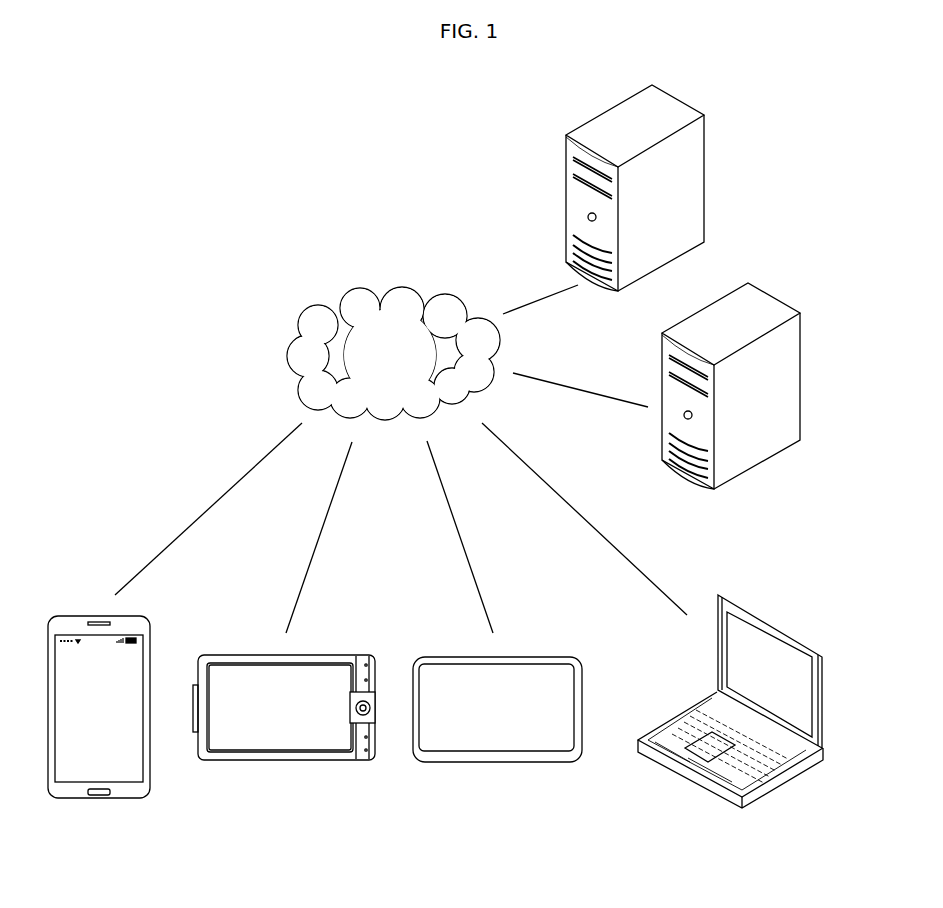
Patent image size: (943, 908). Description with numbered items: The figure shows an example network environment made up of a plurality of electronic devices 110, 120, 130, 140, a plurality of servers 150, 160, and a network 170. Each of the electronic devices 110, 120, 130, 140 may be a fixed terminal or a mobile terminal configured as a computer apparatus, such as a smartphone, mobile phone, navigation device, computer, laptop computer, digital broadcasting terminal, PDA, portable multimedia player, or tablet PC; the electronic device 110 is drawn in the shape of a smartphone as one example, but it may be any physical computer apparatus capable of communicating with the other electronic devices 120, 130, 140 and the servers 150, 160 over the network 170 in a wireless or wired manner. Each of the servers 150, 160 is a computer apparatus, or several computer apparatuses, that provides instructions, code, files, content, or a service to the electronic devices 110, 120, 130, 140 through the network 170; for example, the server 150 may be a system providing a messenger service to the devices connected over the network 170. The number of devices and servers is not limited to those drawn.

The electronic device 110 is at (98, 799).
The electronic device 120 is at (283, 761).
The electronic device 130 is at (497, 763).
The electronic device 140 is at (824, 703).
The server 150 is at (800, 377).
The server 160 is at (705, 177).
The network 170 is at (397, 287).